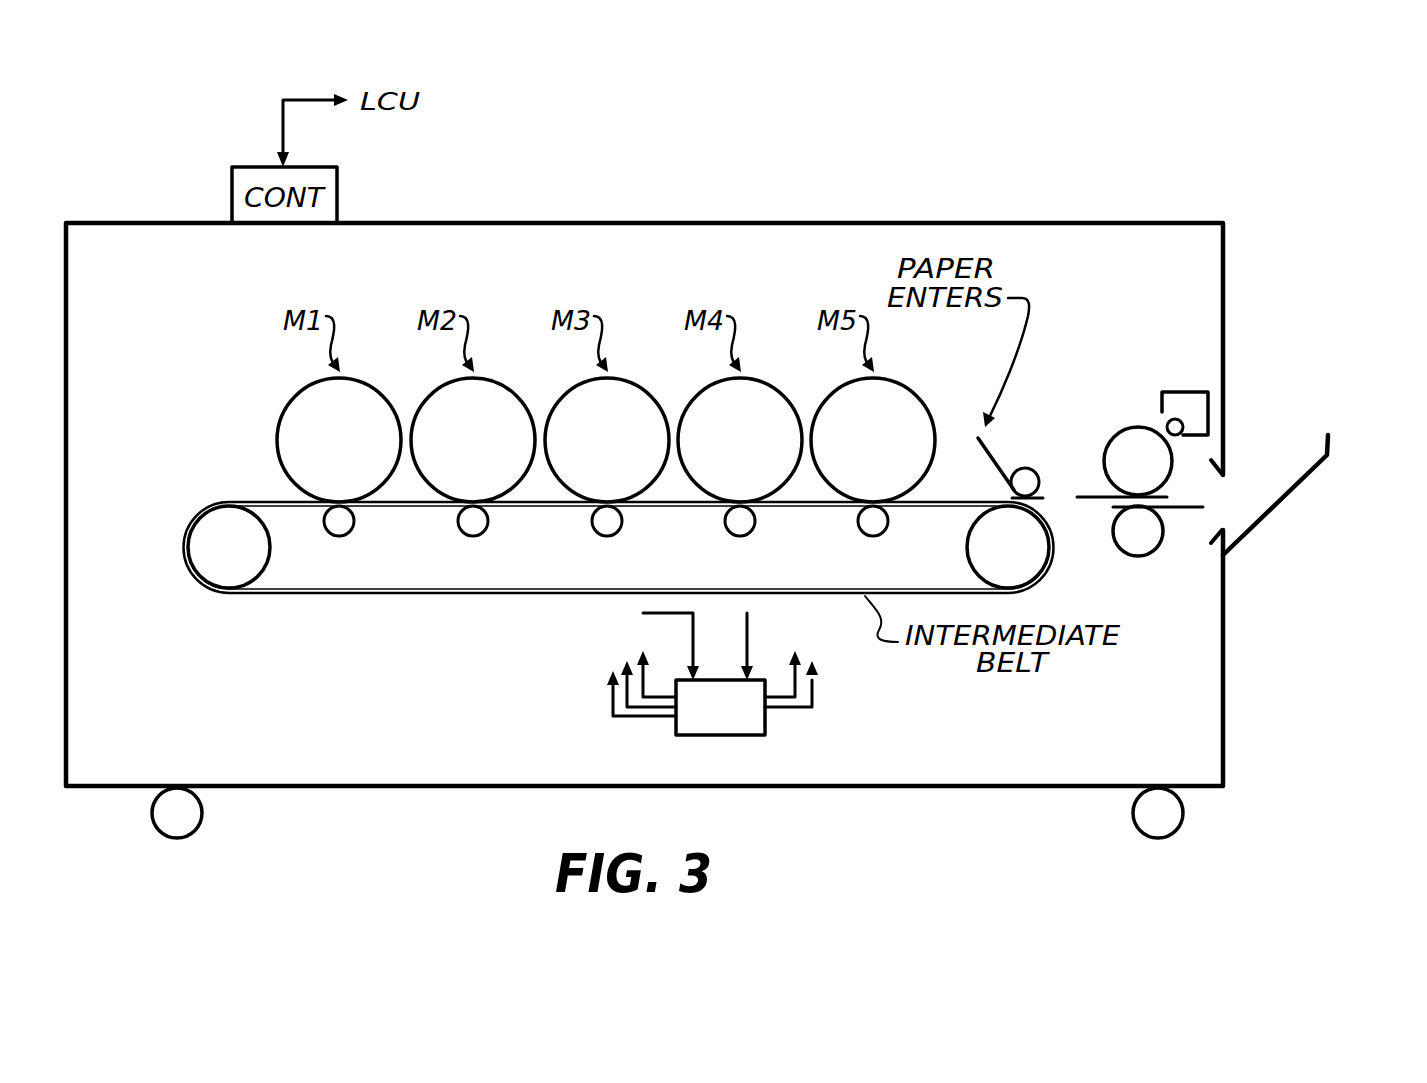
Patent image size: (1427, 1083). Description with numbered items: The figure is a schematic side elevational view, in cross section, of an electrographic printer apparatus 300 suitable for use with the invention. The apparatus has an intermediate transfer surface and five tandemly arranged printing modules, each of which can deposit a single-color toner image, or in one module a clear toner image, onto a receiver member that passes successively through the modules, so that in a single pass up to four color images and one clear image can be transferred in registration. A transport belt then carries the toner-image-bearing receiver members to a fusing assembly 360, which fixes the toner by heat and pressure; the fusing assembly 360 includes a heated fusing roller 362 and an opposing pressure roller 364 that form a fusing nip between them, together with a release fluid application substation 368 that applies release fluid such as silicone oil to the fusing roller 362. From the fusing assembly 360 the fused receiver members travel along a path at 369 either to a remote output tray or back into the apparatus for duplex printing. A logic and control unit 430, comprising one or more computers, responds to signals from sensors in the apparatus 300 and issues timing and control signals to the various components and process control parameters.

The electrographic printer apparatus 300 is at (1048, 122).
The fusing assembly 360 is at (1116, 370).
The heated fusing roller 362 is at (1128, 428).
The pressure roller 364 is at (1135, 557).
The release fluid application substation 368 is at (1200, 391).
The paper exit 369 is at (1283, 498).
The logic and control unit 430 is at (703, 736).